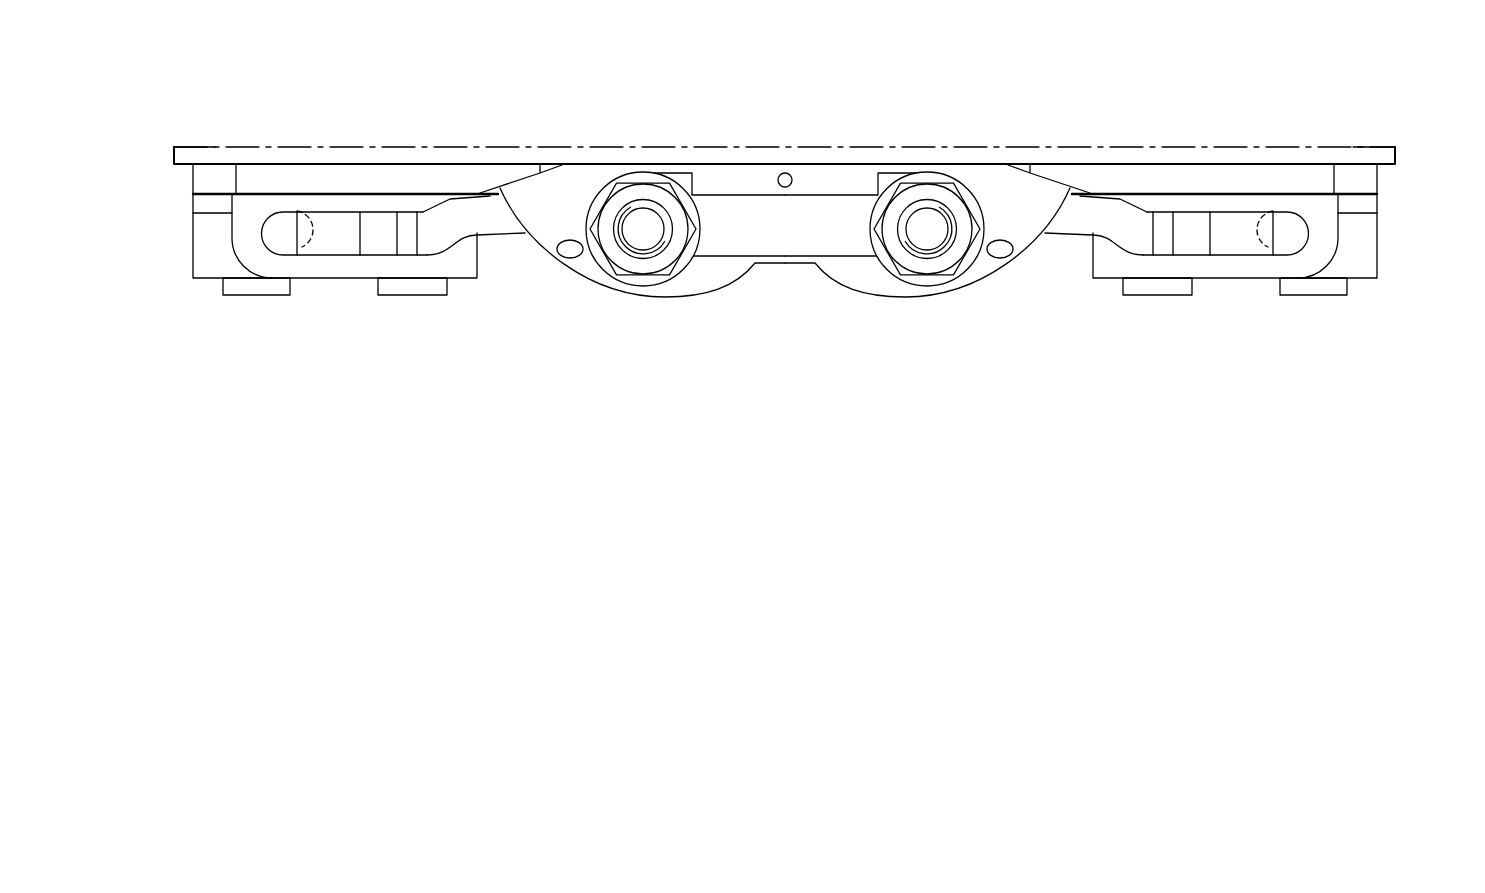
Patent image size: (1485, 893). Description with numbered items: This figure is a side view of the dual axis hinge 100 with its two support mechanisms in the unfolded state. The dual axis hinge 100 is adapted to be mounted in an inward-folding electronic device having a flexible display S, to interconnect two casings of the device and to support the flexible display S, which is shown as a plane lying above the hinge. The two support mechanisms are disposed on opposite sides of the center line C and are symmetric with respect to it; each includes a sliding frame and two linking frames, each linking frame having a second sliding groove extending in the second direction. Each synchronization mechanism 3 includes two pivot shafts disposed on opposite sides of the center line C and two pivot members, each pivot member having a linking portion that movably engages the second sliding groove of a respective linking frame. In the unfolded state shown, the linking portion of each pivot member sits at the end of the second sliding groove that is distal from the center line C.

The dual axis hinge 100 is at (1227, 97).
The flexible display S is at (1359, 147).
The center line C is at (786, 163).
The synchronization mechanism 3 is at (943, 298).